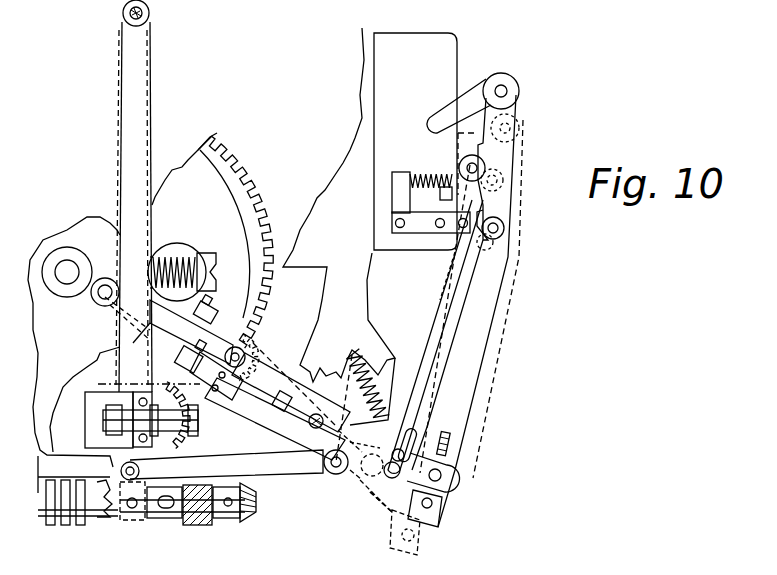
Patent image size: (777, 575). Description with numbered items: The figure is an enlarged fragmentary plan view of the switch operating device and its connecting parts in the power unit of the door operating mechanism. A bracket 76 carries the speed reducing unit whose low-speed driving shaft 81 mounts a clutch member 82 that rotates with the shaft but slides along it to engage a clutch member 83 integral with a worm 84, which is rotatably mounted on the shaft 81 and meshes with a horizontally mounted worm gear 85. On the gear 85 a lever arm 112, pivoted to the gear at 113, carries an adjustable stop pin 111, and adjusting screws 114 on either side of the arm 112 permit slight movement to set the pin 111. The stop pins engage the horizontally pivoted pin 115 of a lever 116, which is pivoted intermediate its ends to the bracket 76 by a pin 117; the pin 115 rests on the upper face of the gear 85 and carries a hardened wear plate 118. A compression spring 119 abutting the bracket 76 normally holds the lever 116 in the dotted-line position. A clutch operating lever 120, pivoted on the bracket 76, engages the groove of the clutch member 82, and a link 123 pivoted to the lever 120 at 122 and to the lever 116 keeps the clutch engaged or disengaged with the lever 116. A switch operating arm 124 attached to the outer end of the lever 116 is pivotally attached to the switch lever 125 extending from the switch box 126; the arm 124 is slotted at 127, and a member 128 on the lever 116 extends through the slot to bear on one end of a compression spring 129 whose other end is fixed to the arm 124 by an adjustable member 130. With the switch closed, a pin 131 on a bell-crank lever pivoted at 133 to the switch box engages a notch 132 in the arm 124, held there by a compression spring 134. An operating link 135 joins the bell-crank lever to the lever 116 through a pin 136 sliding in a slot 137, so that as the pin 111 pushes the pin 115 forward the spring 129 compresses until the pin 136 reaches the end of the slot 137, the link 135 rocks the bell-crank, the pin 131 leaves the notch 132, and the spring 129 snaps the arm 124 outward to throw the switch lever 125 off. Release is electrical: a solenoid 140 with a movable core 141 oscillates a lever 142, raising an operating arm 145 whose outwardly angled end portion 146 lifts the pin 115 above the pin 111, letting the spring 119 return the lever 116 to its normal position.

The bracket 76 is at (360, 290).
The driving shaft 81 is at (197, 519).
The clutch member 82 is at (158, 519).
The clutch member 83 is at (118, 540).
The worm 84 is at (62, 527).
The worm gear 85 is at (233, 200).
The adjustable stop pin 111 is at (242, 354).
The lever arm 112 is at (165, 318).
The pivot 113 is at (104, 300).
The adjusting screws 114 is at (228, 290).
The horizontally pivoted pin 115 is at (258, 403).
The lever 116 is at (357, 468).
The pin 117 is at (310, 426).
The hardened wear plate 118 is at (202, 388).
The compression spring 119 is at (357, 389).
The clutch operating lever 120 is at (130, 171).
The pivot 122 is at (136, 470).
The link 123 is at (302, 476).
The switch operating arm 124 is at (472, 355).
The switch lever 125 is at (463, 100).
The switch box 126 is at (395, 63).
The slot 127 is at (449, 445).
The member 128 is at (441, 478).
The compression spring 129 is at (450, 450).
The adjustable member 130 is at (471, 197).
The pin 131 is at (507, 170).
The notch 132 is at (512, 145).
The pivot 133 is at (415, 286).
The compression spring 134 is at (425, 172).
The operating link 135 is at (455, 332).
The pin 136 is at (382, 444).
The slot 137 is at (425, 433).
The solenoid 140 is at (92, 440).
The movable core 141 is at (107, 410).
The lever 142 is at (100, 458).
The operating arm 145 is at (220, 518).
The outwardly angled end portion 146 is at (192, 440).